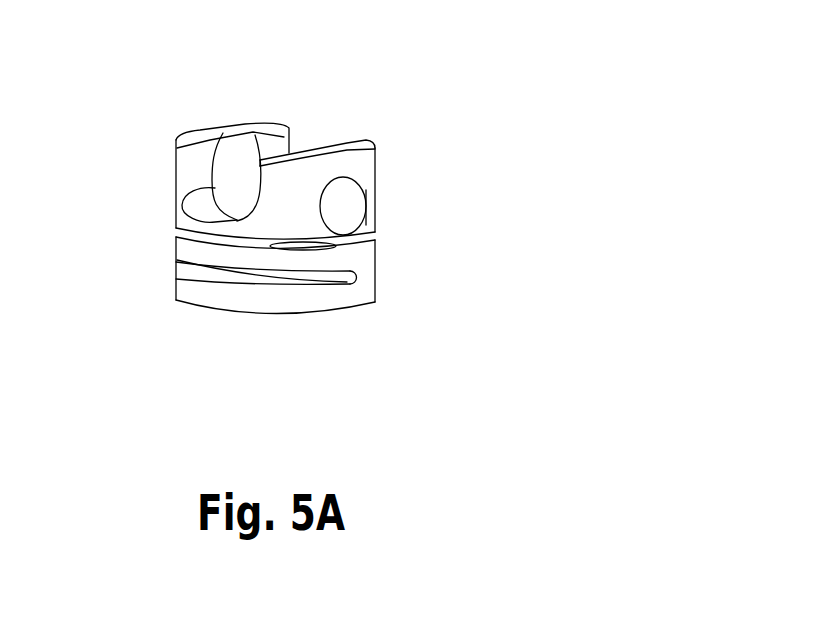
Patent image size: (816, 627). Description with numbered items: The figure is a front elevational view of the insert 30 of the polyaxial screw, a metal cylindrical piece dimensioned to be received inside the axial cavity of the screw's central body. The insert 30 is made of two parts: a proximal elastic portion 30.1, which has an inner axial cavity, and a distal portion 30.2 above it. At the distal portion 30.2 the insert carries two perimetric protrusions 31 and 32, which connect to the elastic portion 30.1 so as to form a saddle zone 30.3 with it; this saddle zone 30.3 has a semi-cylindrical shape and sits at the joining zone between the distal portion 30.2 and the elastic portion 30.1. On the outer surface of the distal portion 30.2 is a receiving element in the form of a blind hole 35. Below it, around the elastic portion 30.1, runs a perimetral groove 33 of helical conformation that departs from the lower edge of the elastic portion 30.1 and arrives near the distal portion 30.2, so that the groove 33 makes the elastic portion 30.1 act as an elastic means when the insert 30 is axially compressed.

The insert 30 is at (257, 187).
The elastic portion 30.1 is at (383, 307).
The distal portion 30.2 is at (237, 99).
The saddle zone 30.3 is at (197, 202).
The perimetric protrusion 31 is at (350, 146).
The perimetric protrusion 32 is at (232, 128).
The perimetral groove 33 is at (192, 268).
The blind hole 35 is at (345, 210).